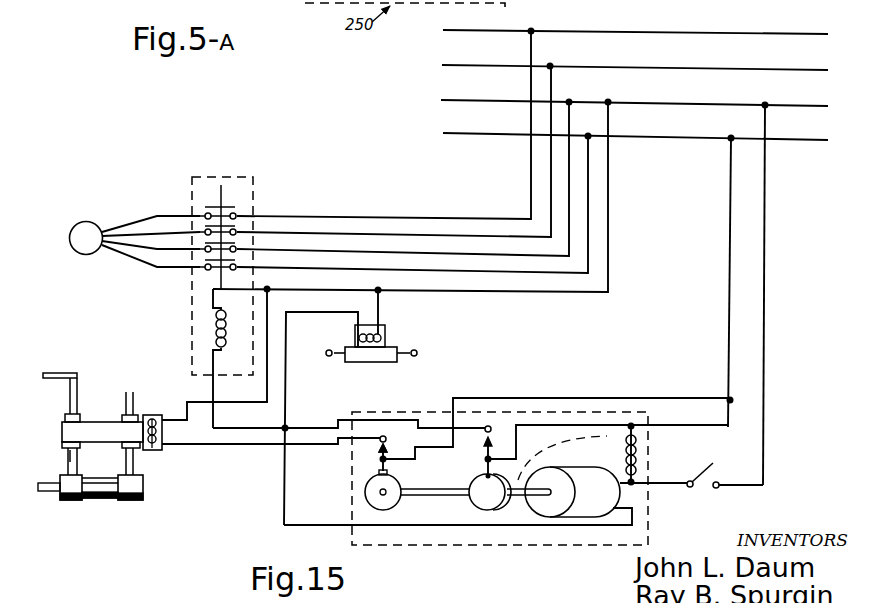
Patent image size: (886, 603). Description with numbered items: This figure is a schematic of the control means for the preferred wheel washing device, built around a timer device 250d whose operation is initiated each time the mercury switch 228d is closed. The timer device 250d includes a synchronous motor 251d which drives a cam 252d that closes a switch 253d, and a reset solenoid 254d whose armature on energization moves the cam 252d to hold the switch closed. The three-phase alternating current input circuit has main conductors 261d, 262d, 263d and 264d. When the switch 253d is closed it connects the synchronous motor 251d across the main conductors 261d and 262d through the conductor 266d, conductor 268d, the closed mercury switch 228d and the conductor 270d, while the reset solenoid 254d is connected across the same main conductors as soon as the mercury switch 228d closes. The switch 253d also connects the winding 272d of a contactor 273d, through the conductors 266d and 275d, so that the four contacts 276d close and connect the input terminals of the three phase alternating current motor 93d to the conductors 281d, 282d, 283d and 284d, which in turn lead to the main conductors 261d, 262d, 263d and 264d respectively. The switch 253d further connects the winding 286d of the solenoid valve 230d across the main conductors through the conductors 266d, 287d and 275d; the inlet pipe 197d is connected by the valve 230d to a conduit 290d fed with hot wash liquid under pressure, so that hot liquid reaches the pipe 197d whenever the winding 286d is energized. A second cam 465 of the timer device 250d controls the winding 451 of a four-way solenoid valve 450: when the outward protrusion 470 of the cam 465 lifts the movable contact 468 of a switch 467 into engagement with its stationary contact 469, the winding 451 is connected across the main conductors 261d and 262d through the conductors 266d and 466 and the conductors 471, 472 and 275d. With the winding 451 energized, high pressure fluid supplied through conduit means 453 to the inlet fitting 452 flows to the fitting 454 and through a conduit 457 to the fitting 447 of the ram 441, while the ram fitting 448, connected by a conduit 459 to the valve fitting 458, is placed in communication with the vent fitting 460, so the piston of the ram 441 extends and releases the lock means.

The three phase alternating current motor 93d is at (72, 228).
The contacts 276d is at (236, 231).
The contactor 273d is at (192, 356).
The winding 272d is at (215, 326).
The conductor 472 is at (270, 318).
The main conductor 264d is at (655, 30).
The main conductor 263d is at (653, 66).
The main conductor 262d is at (665, 103).
The main conductor 261d is at (667, 137).
The conductor 284d is at (488, 211).
The conductor 283d is at (488, 231).
The conductor 282d is at (488, 246).
The conductor 281d is at (490, 265).
The conductor 275d is at (509, 291).
The conductor 266d is at (729, 199).
The conductor 270d is at (770, 200).
The conductor 287d is at (290, 384).
The winding 286d is at (392, 330).
The solenoid valve 230d is at (368, 363).
The conduit 290d is at (338, 350).
The inlet pipe 197d is at (410, 351).
The conductor 471 is at (252, 448).
The conductor 268d is at (284, 513).
The stationary contact 469 is at (387, 436).
The movable contact 468 is at (391, 447).
The switch 467 is at (374, 449).
The conductor 466 is at (596, 378).
The outward protrusion 470 is at (360, 492).
The second cam 465 is at (393, 499).
The cam 252d is at (483, 480).
The switch 253d is at (497, 431).
The synchronous motor 251d is at (587, 458).
The reset solenoid 254d is at (640, 459).
The mercury switch 228d is at (712, 473).
The timer device 250d is at (533, 548).
The conduit means 453 is at (82, 360).
The inlet fitting 452 is at (80, 412).
The four-way solenoid valve 450 is at (91, 430).
The vent fitting 460 is at (134, 414).
The valve fitting 458 is at (61, 444).
The fitting 454 is at (124, 446).
The fitting 448 is at (68, 464).
The conduit 459 is at (75, 458).
The conduit 457 is at (138, 457).
The fitting 447 is at (141, 473).
The ram 441 is at (100, 499).
The winding 451 is at (164, 431).